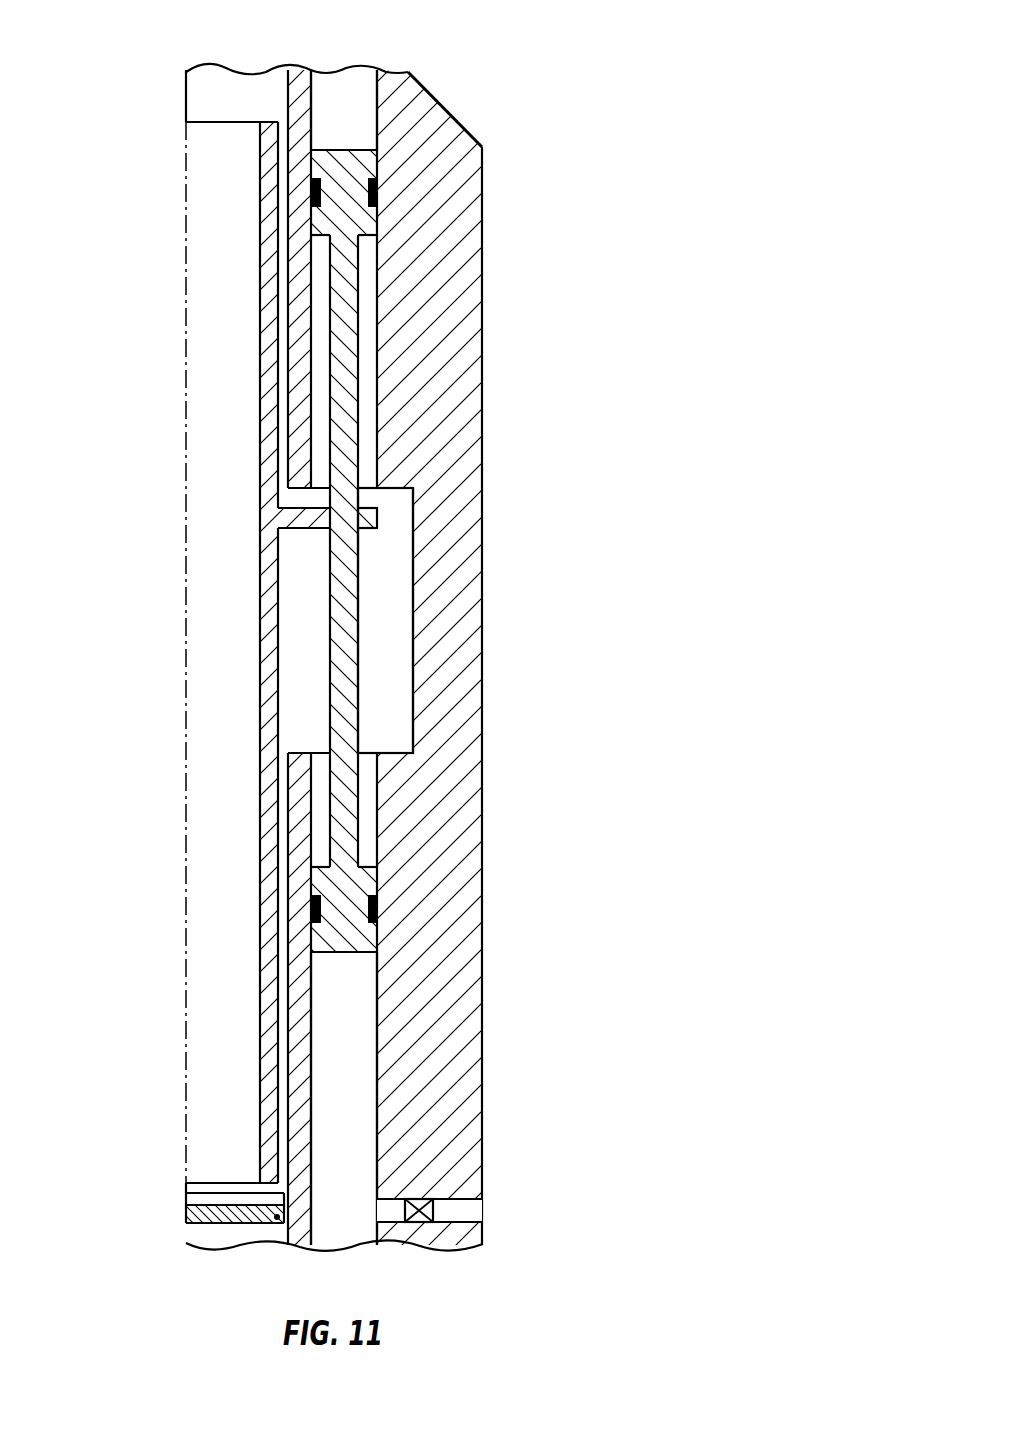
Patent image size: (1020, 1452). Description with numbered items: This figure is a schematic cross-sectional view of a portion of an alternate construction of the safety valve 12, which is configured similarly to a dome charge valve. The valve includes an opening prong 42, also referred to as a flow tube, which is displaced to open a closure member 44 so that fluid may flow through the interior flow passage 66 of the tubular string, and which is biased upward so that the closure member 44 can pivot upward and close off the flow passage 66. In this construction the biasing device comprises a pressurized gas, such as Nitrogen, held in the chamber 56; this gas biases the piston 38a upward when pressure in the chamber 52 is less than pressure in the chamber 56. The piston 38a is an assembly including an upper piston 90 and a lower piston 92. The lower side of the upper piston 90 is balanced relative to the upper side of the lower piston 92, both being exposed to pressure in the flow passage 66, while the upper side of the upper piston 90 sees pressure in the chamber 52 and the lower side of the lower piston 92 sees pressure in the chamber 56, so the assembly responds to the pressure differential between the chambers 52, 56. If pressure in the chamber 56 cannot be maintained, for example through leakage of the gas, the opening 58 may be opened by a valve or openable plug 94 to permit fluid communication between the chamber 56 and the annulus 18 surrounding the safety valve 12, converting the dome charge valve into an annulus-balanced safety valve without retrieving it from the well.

The safety valve 12 is at (692, 64).
The annulus 18 is at (544, 937).
The piston 38a is at (358, 595).
The opening prong 42 is at (277, 1132).
The closure member 44 is at (197, 1222).
The chamber 52 is at (352, 92).
The chamber 56 is at (347, 1022).
The opening 58 is at (470, 1220).
The flow passage 66 is at (212, 1092).
The upper piston 90 is at (377, 225).
The lower piston 92 is at (377, 877).
The openable plug 94 is at (420, 1195).